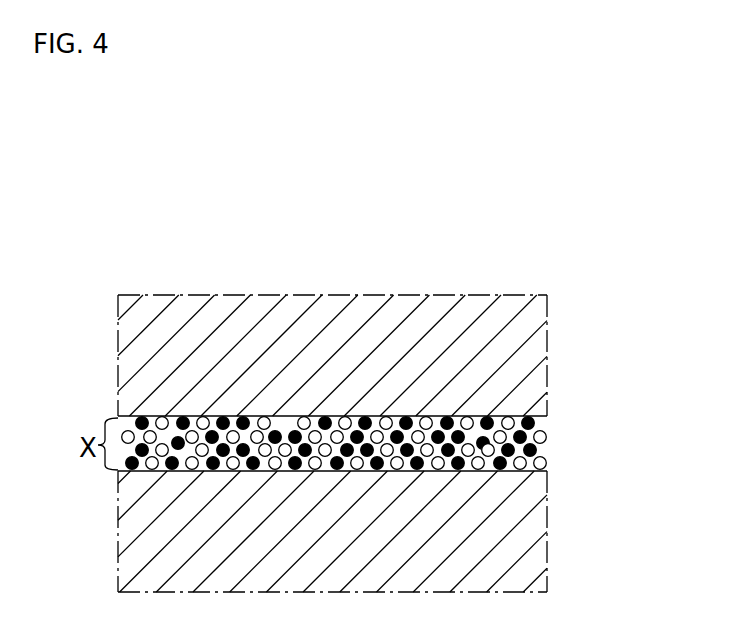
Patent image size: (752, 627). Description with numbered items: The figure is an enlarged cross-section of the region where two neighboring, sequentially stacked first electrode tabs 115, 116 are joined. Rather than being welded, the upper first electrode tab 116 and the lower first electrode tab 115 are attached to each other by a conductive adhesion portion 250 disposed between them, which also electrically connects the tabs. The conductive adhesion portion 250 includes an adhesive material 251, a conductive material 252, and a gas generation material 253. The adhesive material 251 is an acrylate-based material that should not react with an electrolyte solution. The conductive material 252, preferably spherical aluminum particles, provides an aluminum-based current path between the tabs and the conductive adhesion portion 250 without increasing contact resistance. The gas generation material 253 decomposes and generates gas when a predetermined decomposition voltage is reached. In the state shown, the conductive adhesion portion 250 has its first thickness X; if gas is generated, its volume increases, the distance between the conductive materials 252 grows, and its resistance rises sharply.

The first electrode tab 116 is at (543, 332).
The first electrode tab 115 is at (543, 557).
The conductive adhesion portion 250 is at (659, 380).
The adhesive material 251 is at (547, 420).
The conductive material 252 is at (547, 463).
The gas generation material 253 is at (547, 442).